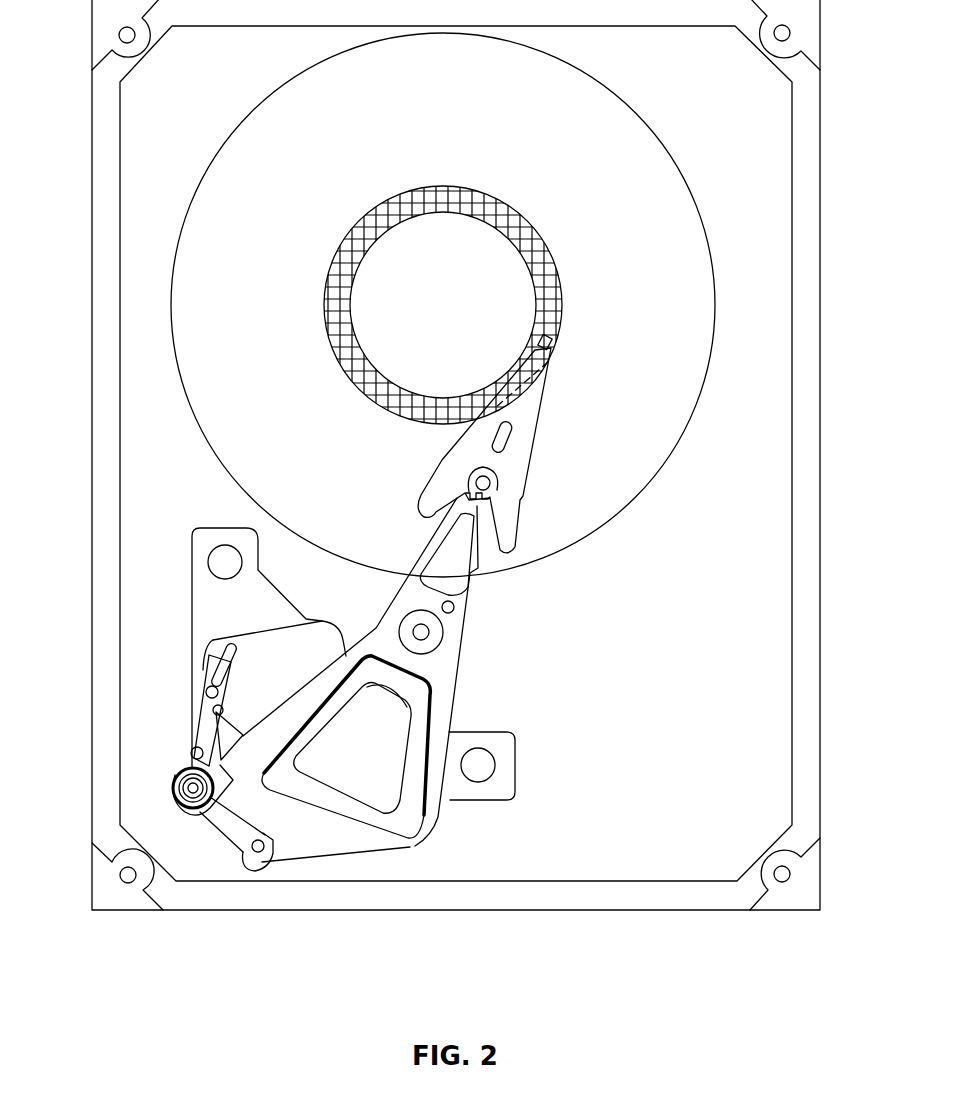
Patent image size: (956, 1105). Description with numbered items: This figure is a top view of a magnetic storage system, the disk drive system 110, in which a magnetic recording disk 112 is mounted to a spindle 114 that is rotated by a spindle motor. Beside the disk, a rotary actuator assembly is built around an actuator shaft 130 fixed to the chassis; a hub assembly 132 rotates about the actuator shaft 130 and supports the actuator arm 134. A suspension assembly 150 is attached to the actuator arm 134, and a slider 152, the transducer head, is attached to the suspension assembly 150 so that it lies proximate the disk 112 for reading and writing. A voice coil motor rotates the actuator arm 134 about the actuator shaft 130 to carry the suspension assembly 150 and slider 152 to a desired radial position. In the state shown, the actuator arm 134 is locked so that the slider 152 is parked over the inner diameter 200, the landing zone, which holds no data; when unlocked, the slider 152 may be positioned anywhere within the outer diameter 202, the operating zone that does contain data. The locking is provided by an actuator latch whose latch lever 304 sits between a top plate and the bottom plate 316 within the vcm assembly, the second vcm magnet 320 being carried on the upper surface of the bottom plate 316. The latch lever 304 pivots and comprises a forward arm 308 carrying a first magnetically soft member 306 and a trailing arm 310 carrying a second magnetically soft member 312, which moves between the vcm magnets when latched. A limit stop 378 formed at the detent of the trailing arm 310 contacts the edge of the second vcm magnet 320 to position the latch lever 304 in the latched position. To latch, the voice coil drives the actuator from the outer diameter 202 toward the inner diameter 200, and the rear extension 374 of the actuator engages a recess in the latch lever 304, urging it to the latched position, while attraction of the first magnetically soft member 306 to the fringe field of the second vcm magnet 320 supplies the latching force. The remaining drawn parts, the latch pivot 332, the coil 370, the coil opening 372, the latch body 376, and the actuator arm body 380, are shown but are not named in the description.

The disk drive system 110 is at (822, 200).
The magnetic recording disk 112 is at (686, 161).
The spindle 114 is at (424, 327).
The actuator shaft 130 is at (422, 633).
The hub assembly 132 is at (434, 622).
The actuator arm 134 is at (542, 745).
The suspension assembly 150 is at (537, 411).
The slider 152 is at (552, 347).
The inner diameter 200 is at (527, 238).
The outer diameter 202 is at (642, 453).
The latch lever 304 is at (222, 832).
The first magnetically soft member 306 is at (250, 858).
The forward arm 308 is at (268, 848).
The trailing arm 310 is at (225, 653).
The second magnetically soft member 312 is at (212, 688).
The bottom plate 316 is at (493, 787).
The second vcm magnet 320 is at (256, 680).
The latch pivot 332 is at (183, 791).
The coil 370 is at (370, 830).
The coil opening 372 is at (350, 763).
The rear extension 374 is at (196, 753).
The latch body 376 is at (177, 777).
The limit stop 378 is at (218, 710).
The actuator arm 380 is at (430, 812).